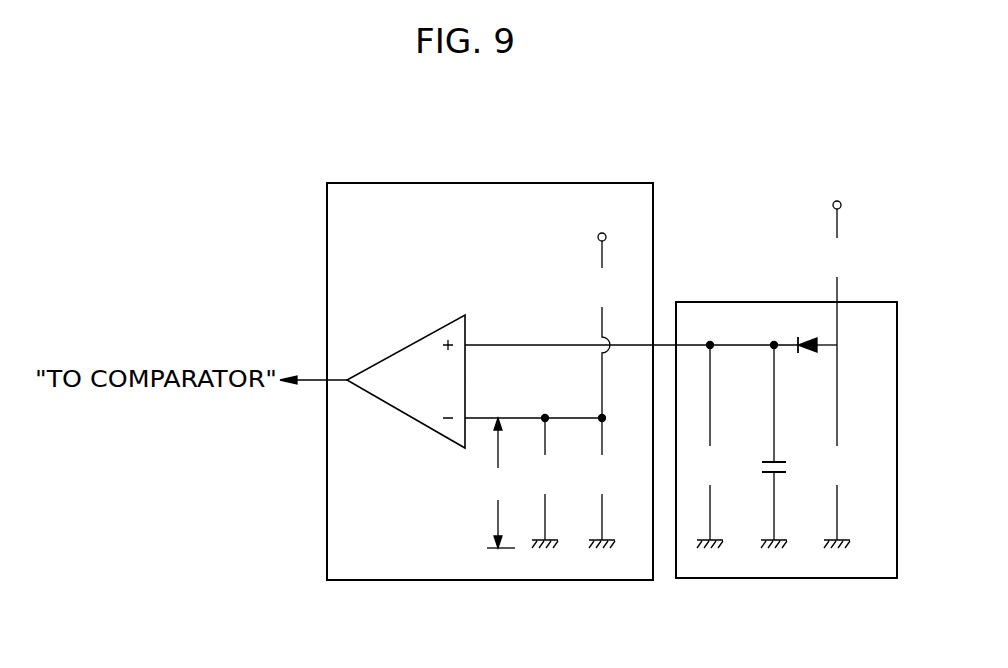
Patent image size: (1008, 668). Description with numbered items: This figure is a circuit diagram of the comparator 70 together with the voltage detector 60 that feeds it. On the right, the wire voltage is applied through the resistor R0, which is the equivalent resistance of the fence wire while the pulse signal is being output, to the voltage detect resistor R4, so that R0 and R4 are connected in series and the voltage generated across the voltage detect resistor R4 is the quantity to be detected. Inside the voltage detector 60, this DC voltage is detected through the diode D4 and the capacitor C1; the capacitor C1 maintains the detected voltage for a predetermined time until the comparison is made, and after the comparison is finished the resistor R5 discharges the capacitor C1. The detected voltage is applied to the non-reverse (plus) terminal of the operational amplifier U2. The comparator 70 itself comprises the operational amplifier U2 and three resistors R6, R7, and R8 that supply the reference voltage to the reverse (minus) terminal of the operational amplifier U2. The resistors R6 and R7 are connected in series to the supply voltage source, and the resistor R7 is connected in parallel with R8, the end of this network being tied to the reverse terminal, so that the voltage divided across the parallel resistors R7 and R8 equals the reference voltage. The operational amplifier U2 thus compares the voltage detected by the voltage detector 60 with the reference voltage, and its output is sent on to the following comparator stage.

The comparator 70 is at (624, 183).
The voltage detector 60 is at (776, 302).
The operational amplifier U2 is at (406, 381).
The resistor R6 is at (624, 291).
The resistor R7 is at (624, 478).
The resistor R8 is at (567, 478).
The resistor R5 is at (732, 468).
The voltage detect resistor R4 is at (860, 468).
The resistor R0 is at (860, 261).
The capacitor C1 is at (788, 468).
The diode D4 is at (803, 331).